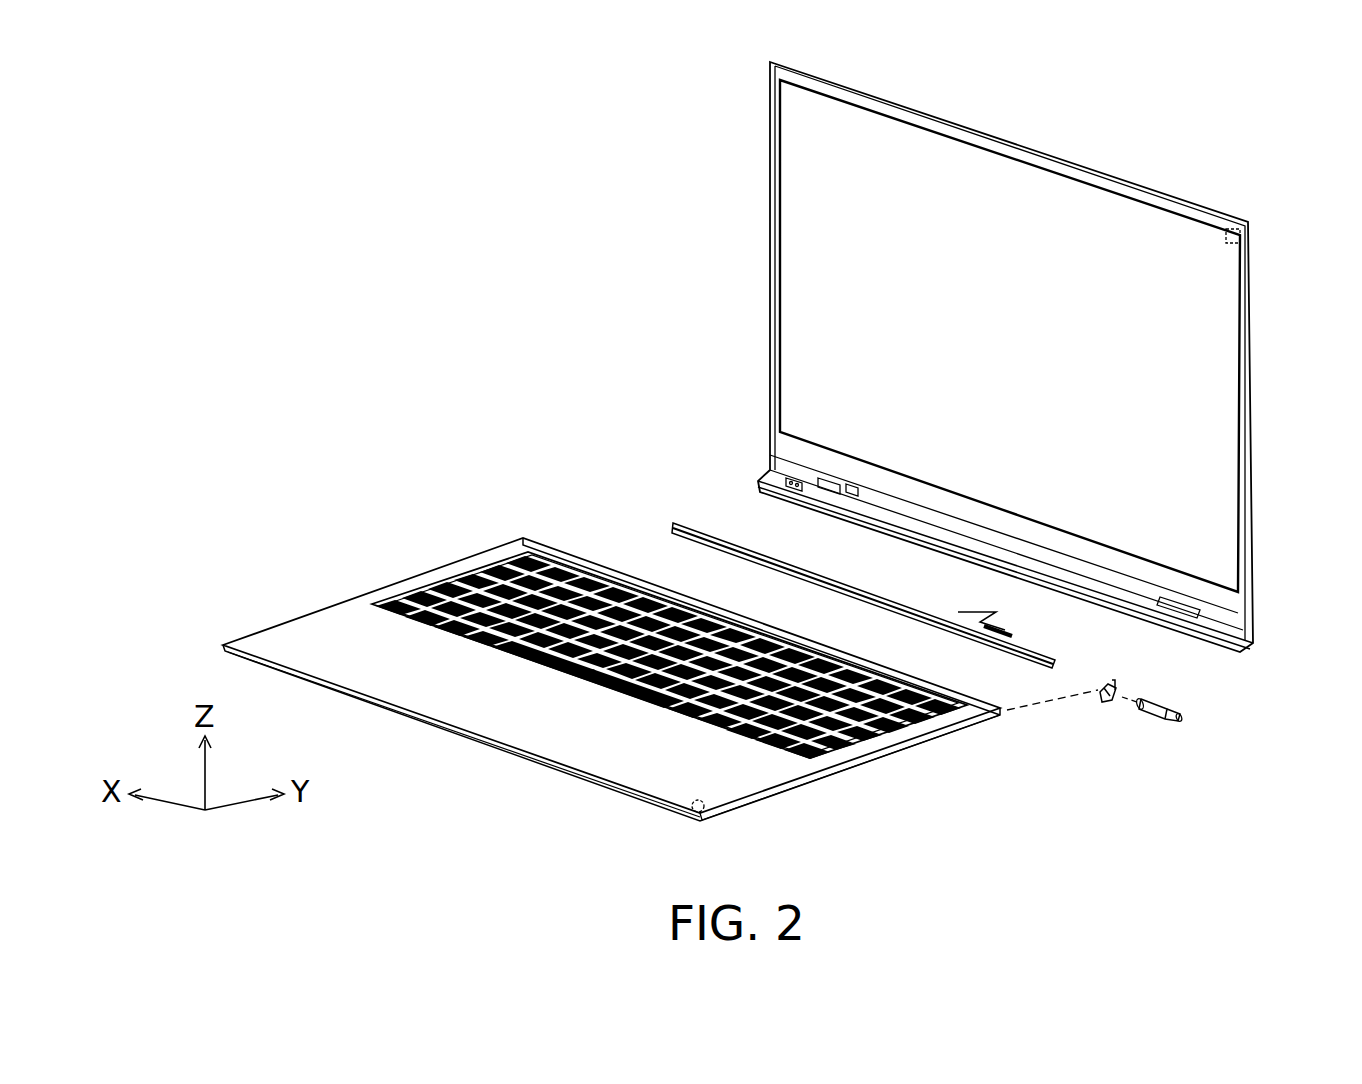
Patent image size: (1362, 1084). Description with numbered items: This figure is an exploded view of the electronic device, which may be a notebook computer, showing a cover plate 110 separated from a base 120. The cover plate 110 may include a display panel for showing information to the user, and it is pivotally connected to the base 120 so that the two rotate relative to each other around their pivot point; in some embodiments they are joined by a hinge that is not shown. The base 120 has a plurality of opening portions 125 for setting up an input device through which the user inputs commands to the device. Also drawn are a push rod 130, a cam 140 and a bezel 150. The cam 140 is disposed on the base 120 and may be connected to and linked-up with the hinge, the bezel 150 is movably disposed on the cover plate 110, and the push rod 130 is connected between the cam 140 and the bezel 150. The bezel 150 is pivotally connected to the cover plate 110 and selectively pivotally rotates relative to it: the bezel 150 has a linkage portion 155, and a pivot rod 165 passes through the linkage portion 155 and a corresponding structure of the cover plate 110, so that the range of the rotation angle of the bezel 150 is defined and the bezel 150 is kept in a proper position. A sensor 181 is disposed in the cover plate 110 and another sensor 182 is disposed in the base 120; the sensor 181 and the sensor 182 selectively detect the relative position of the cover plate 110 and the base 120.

The cover plate 110 is at (1243, 424).
The base 120 is at (312, 632).
The opening portions 125 is at (436, 592).
The push rod 130 is at (1107, 702).
The cam 140 is at (1163, 722).
The bezel 150 is at (680, 527).
The linkage portion 155 is at (1008, 636).
The pivot rod 165 is at (962, 610).
The sensor 181 is at (1257, 236).
The sensor 182 is at (706, 812).